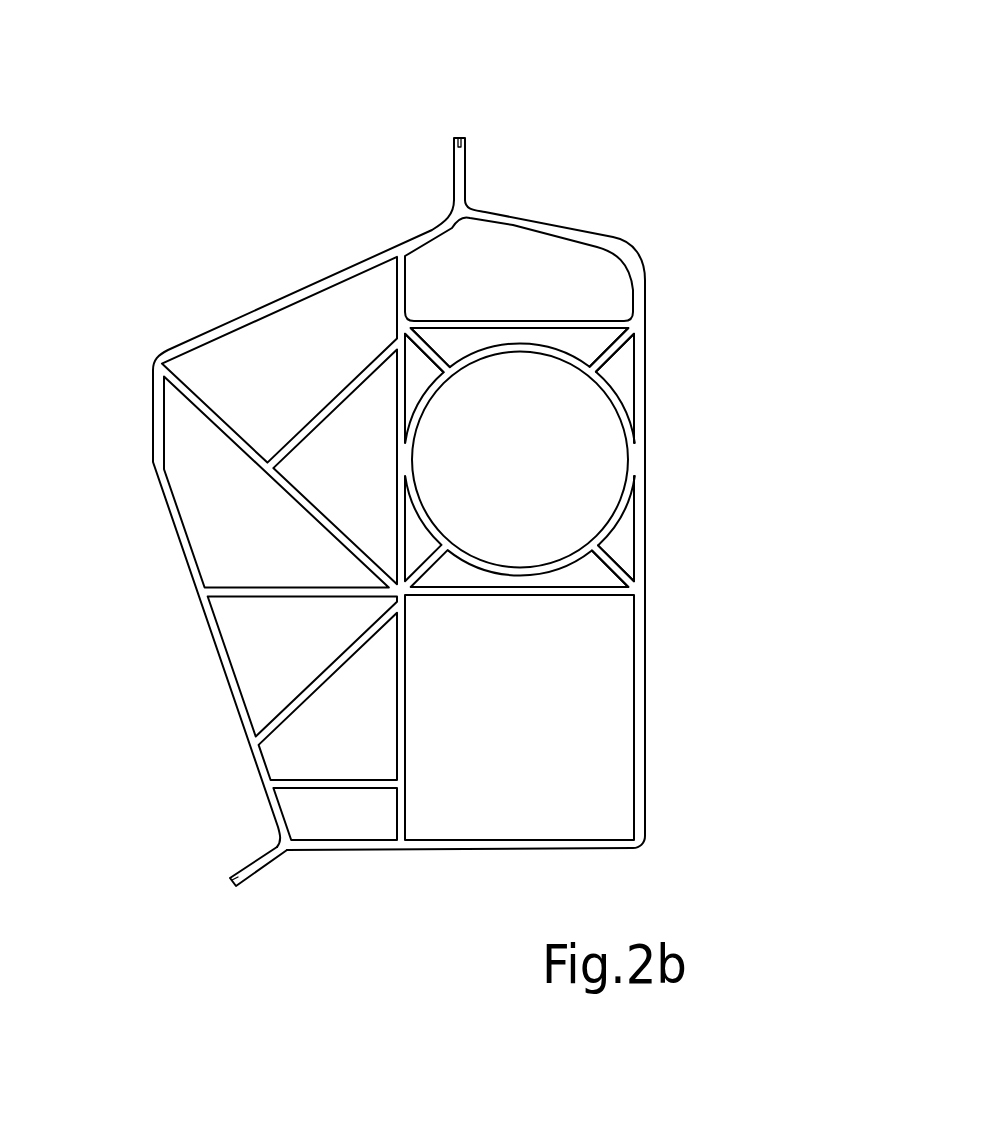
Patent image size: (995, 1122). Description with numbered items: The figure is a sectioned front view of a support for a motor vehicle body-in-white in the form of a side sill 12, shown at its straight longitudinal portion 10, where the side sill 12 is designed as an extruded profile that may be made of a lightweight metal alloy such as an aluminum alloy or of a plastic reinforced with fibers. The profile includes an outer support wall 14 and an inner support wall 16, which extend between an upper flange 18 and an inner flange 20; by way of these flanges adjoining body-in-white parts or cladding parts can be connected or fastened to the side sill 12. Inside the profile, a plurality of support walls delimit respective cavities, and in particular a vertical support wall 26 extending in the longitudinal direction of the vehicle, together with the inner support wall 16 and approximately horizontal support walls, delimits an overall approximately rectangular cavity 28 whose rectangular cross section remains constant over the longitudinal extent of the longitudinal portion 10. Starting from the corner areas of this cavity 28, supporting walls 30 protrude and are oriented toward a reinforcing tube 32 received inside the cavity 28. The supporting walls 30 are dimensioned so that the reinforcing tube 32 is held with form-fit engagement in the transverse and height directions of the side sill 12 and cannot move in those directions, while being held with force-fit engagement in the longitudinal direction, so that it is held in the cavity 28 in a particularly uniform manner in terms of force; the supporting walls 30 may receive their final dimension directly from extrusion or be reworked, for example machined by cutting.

The longitudinal portion 10 is at (324, 261).
The side sill 12 is at (615, 127).
The outer support wall 14 is at (193, 572).
The inner support wall 16 is at (638, 502).
The upper flange 18 is at (462, 136).
The inner flange 20 is at (232, 878).
The vertical support wall 26 is at (402, 732).
The cavity 28 is at (624, 365).
The supporting walls 30 is at (418, 364).
The reinforcing tube 32 is at (627, 404).